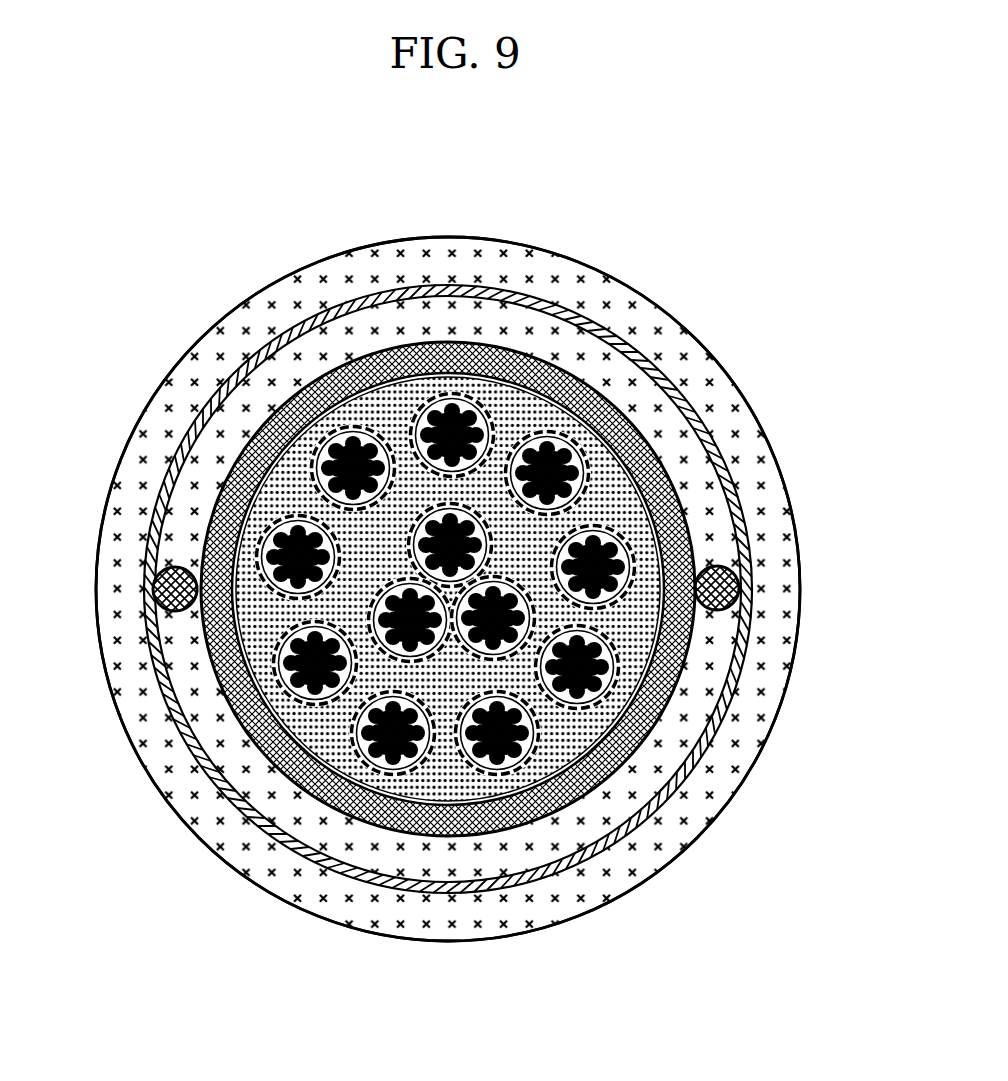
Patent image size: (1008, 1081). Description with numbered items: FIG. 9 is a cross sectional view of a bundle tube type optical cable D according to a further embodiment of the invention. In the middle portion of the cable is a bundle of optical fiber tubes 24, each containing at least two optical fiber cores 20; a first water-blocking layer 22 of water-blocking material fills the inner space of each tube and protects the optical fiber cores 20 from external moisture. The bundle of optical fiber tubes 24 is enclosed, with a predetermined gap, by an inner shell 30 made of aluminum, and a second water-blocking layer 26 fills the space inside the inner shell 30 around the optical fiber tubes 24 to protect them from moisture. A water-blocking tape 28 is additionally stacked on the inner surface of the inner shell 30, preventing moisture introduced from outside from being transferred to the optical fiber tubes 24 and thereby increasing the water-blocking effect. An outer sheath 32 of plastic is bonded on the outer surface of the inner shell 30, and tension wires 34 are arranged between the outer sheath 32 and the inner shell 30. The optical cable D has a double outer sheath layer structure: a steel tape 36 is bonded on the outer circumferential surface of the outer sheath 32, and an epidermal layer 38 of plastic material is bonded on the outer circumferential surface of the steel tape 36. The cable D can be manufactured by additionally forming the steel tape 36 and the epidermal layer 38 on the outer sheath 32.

The optical fiber cores 20 is at (353, 427).
The first water-blocking layer 22 is at (273, 410).
The optical fiber tubes 24 is at (548, 358).
The second water-blocking layer 26 is at (207, 480).
The water-blocking tape 28 is at (212, 667).
The inner shell 30 is at (240, 728).
The outer sheath 32 is at (630, 830).
The tension wires 34 is at (742, 587).
The steel tape 36 is at (700, 410).
The epidermal layer 38 is at (772, 494).
The optical cable D is at (731, 329).